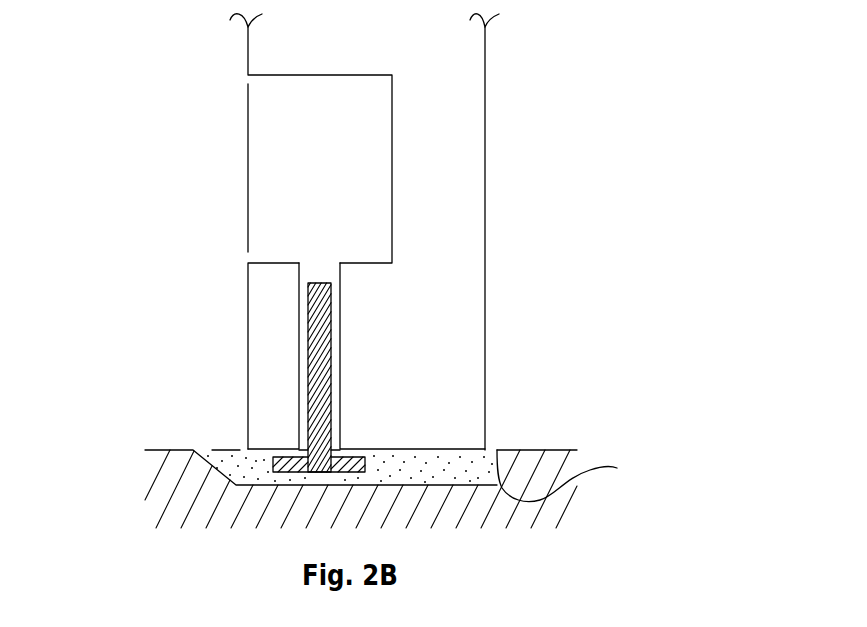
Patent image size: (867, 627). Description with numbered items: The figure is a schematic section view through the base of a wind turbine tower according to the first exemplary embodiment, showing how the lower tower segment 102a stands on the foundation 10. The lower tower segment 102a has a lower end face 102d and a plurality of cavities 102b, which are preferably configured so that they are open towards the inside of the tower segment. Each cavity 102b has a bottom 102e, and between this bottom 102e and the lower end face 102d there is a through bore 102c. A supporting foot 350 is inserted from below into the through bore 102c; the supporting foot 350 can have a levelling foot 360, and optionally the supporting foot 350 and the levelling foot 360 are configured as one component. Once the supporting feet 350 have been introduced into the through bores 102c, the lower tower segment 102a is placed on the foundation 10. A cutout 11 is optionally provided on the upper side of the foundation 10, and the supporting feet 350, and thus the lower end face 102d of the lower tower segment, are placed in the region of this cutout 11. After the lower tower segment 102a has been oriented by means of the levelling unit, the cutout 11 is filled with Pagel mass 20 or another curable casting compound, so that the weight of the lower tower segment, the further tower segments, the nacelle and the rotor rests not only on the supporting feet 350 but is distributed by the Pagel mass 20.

The foundation 10 is at (167, 480).
The cutout 11 is at (574, 477).
The Pagel mass 20 is at (497, 450).
The lower tower segment 102a is at (450, 63).
The cavity 102b is at (270, 100).
The through bore 102c is at (298, 320).
The lower end face 102d is at (455, 449).
The bottom 102e is at (277, 263).
The supporting foot 350 is at (323, 318).
The levelling foot 360 is at (286, 465).